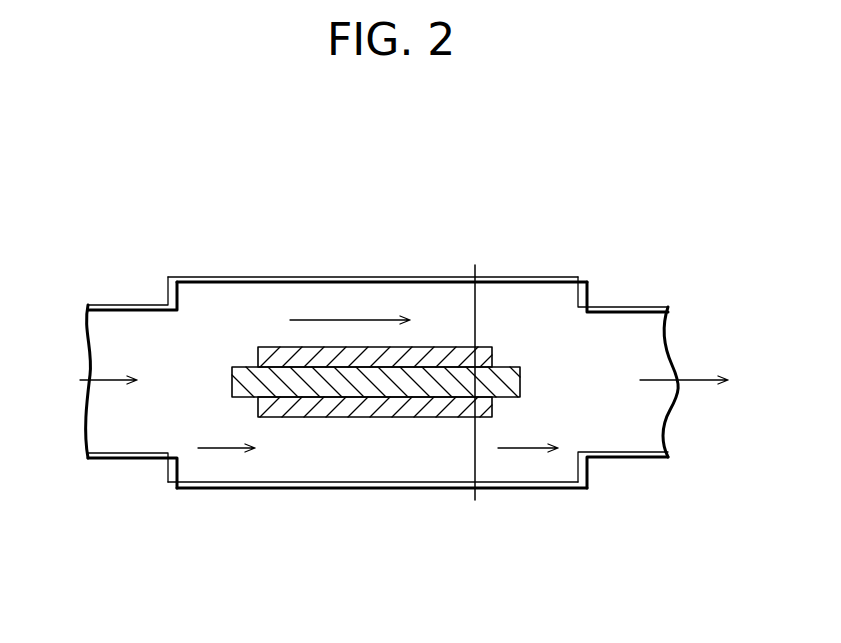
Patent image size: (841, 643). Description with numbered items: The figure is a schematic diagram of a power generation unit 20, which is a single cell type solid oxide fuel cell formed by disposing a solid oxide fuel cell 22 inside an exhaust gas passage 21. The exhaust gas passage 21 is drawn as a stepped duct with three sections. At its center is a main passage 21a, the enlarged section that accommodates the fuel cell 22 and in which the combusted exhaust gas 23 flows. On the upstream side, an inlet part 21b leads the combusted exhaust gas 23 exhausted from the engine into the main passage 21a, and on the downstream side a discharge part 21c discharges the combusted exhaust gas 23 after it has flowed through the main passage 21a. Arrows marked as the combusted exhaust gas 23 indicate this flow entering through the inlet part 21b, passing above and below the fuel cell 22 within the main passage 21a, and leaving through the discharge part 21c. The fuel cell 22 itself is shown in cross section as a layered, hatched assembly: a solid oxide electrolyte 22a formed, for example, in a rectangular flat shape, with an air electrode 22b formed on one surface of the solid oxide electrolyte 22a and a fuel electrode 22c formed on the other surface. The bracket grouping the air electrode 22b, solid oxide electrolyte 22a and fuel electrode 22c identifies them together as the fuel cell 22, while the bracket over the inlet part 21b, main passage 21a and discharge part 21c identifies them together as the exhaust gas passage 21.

The power generation unit 20 is at (606, 200).
The exhaust gas passage 21 is at (511, 185).
The main passage 21a is at (358, 277).
The inlet part 21b is at (142, 305).
The discharge part 21c is at (600, 303).
The solid oxide fuel cell 22 is at (457, 570).
The solid oxide electrolyte 22a is at (367, 385).
The air electrode 22b is at (308, 410).
The fuel electrode 22c is at (431, 353).
The combusted exhaust gas 23 is at (390, 372).